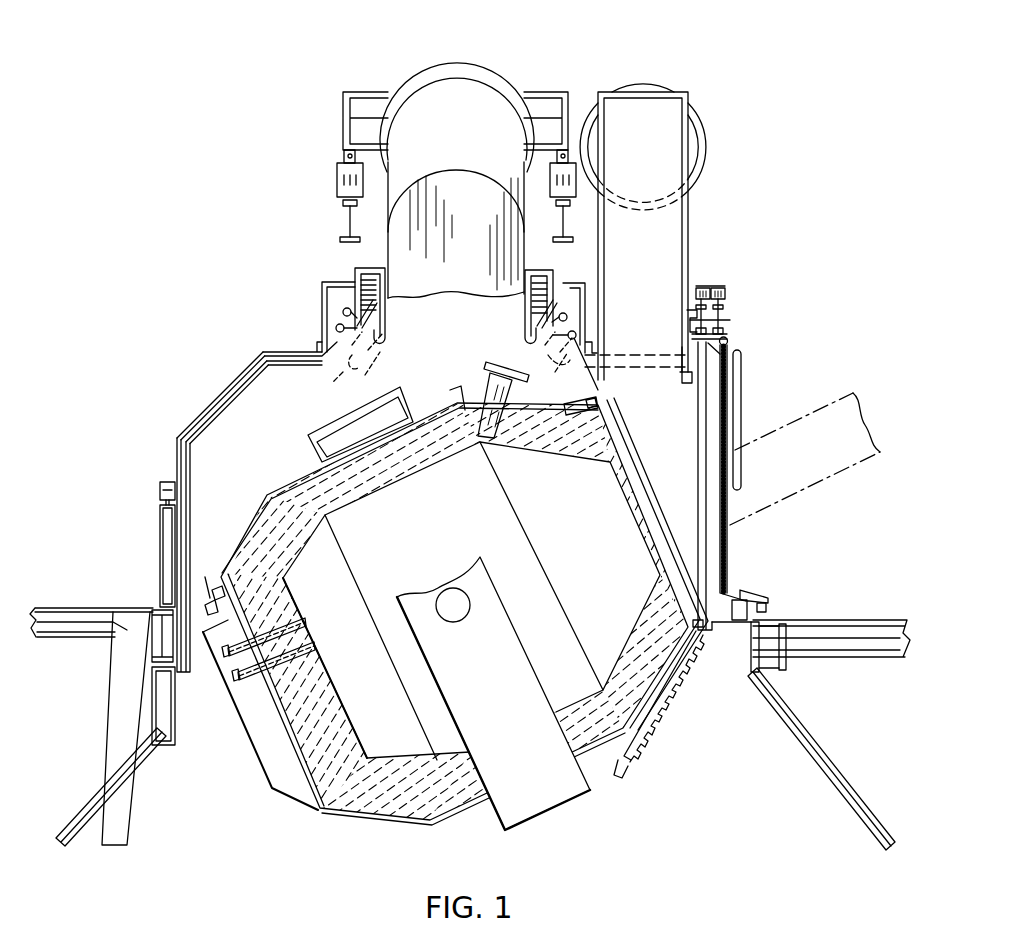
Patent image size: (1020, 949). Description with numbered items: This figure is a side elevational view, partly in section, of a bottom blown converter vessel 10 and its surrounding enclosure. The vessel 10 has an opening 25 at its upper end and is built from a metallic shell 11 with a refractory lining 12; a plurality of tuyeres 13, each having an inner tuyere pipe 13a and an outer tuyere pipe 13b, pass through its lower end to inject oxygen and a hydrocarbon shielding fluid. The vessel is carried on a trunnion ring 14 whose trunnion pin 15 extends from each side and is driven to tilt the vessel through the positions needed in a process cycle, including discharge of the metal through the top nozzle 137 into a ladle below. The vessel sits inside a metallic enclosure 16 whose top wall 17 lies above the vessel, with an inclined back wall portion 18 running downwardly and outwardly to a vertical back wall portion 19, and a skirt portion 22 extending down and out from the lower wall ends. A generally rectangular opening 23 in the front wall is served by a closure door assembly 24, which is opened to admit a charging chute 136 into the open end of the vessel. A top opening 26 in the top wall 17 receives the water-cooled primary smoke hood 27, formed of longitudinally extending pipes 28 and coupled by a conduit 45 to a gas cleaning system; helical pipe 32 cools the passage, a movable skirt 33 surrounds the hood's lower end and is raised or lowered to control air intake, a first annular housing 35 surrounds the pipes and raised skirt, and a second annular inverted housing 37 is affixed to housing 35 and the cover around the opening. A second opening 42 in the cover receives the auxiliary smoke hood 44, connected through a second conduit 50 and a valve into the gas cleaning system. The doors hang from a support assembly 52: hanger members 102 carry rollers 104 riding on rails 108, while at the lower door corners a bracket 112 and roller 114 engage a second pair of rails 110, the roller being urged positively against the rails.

The converter vessel 10 is at (238, 508).
The metallic shell 11 is at (283, 492).
The refractory lining 12 is at (466, 458).
The tuyeres 13 is at (362, 595).
The inner tuyere pipe 13a is at (295, 665).
The outer tuyere pipe 13b is at (350, 598).
The trunnion ring 14 is at (398, 398).
The trunnion pin 15 is at (458, 615).
The metallic enclosure 16 is at (97, 402).
The top wall 17 is at (263, 352).
The inclined back wall portion 18 is at (176, 416).
The vertical back wall portion 19 is at (165, 465).
The skirt portion 22 is at (150, 778).
The rectangular opening 23 is at (685, 433).
The closure door assembly 24 is at (712, 474).
The opening 25 is at (633, 497).
The top opening 26 is at (462, 326).
The smoke hood 27 is at (385, 228).
The longitudinally extending pipes 28 is at (525, 264).
The helical pipe 32 is at (352, 276).
The movable skirt 33 is at (343, 310).
The first annular housing 35 is at (556, 278).
The second annular inverted housing 37 is at (320, 318).
The second opening 42 is at (656, 398).
The auxiliary smoke hood 44 is at (690, 222).
The conduit 45 is at (492, 80).
The second conduit 50 is at (712, 128).
The support assembly 52 is at (760, 282).
The hanger members 102 is at (724, 332).
The rollers 104 is at (716, 288).
The rails 108 is at (732, 326).
The second pair of rails 110 is at (735, 620).
The bracket 112 is at (768, 596).
The roller 114 is at (770, 609).
The charging chute 136 is at (850, 472).
The top nozzle 137 is at (486, 368).